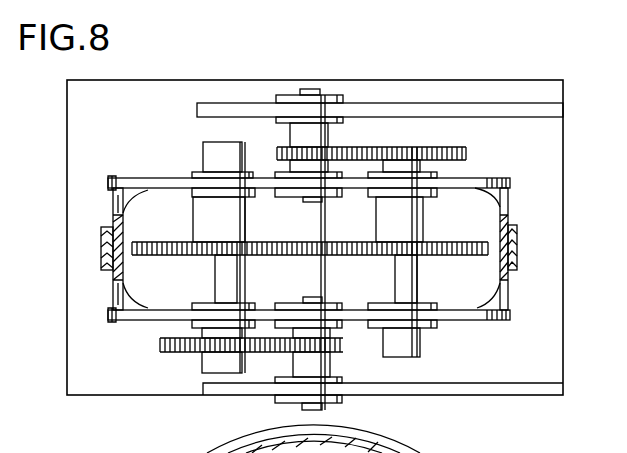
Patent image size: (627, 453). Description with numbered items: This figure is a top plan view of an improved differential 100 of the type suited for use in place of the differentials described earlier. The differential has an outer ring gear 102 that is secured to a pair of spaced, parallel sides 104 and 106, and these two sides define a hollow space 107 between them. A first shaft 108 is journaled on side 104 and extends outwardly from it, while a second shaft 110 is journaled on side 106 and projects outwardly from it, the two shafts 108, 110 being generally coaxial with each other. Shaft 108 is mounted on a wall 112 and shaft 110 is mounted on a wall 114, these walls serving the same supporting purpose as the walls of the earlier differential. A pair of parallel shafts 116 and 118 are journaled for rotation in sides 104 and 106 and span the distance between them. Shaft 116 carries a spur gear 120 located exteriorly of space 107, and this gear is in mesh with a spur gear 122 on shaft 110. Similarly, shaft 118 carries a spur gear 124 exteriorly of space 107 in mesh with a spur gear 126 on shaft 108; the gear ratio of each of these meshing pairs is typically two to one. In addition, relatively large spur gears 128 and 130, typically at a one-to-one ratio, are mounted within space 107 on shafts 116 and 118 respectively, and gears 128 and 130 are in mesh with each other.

The gear train assembly 100 is at (497, 400).
The outer ring gear 102 is at (518, 254).
The side 104 is at (476, 178).
The side 106 is at (472, 321).
The hollow space 107 is at (496, 205).
The first shaft 108 is at (319, 89).
The second shaft 110 is at (322, 407).
The wall 112 is at (421, 107).
The wall 114 is at (507, 383).
The parallel shaft 116 is at (243, 282).
The parallel shaft 118 is at (412, 292).
The spur gear 120 is at (173, 351).
The spur gear 122 is at (343, 342).
The spur gear 124 is at (458, 136).
The spur gear 126 is at (352, 148).
The spur gear 128 is at (272, 241).
The spur gear 130 is at (446, 242).